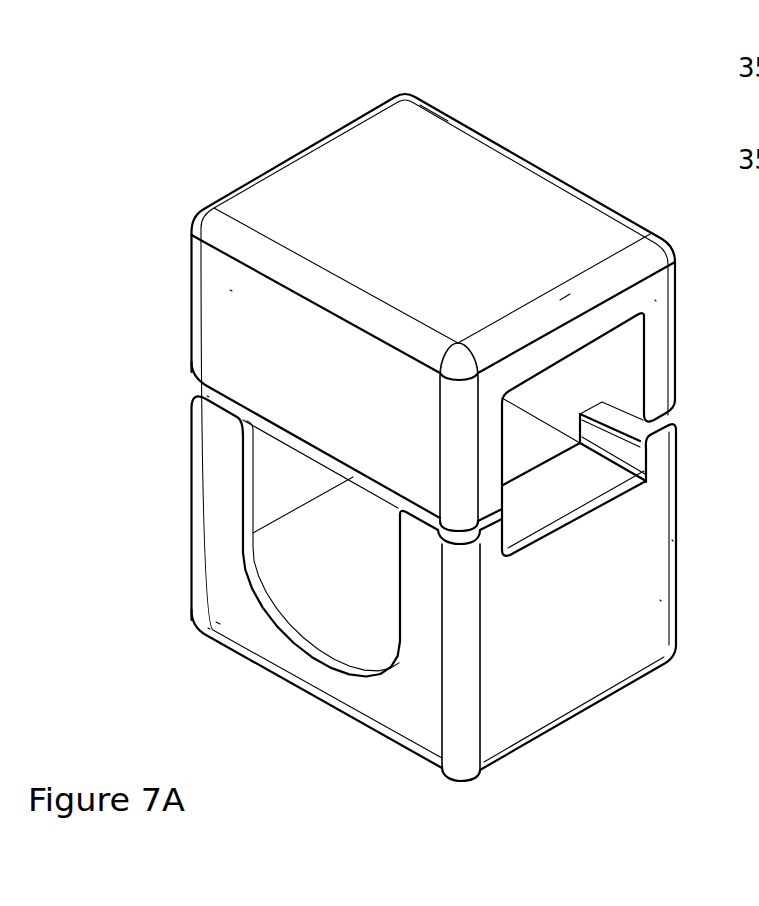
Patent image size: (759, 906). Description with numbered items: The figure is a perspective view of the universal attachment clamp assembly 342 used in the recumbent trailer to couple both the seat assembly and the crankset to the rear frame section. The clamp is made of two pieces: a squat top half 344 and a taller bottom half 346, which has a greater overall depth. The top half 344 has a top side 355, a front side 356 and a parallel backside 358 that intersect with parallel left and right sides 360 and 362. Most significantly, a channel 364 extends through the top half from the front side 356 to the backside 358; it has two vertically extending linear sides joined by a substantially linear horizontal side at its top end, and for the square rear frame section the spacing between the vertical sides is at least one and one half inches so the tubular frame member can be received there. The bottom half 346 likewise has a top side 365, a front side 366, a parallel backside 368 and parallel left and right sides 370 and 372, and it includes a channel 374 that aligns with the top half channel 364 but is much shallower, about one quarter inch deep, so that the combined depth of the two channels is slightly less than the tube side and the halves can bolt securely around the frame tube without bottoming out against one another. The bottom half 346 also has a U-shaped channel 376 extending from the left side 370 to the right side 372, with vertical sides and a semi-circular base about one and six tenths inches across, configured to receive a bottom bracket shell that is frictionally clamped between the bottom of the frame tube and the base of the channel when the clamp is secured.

The universal attachment clamp assembly 342 is at (175, 111).
The top half 344 is at (222, 276).
The bottom half 346 is at (217, 563).
The top side 355 is at (472, 85).
The front side 356 is at (660, 303).
The backside 358 is at (250, 181).
The left side 360 is at (222, 338).
The right side 362 is at (590, 199).
The channel 364 is at (623, 377).
The top side 365 is at (385, 745).
The front side 366 is at (658, 619).
The backside 368 is at (192, 436).
The left side 370 is at (235, 623).
The right side 372 is at (680, 556).
The channel 374 is at (607, 480).
The U-shaped channel 376 is at (330, 603).